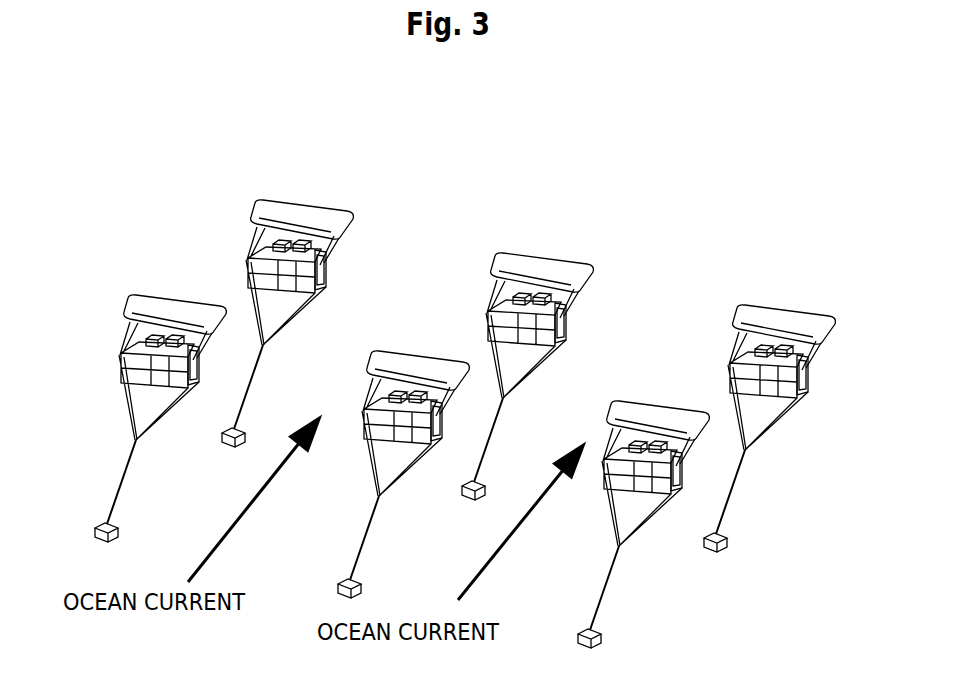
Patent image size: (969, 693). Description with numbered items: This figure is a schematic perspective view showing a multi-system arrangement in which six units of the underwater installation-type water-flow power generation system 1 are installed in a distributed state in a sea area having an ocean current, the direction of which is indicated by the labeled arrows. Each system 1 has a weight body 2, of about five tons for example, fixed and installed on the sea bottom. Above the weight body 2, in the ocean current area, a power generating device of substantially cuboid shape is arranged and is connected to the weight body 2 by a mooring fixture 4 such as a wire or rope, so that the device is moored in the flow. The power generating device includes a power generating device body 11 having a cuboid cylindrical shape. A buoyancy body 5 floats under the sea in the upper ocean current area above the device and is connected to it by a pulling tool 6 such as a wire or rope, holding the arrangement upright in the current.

The underwater installation-type water-flow power generation system 1 is at (105, 303).
The weight body 2 is at (97, 529).
The mooring fixture 4 is at (124, 476).
The buoyancy body 5 is at (172, 302).
The pulling tool 6 is at (130, 323).
The power generating device body 11 is at (122, 367).